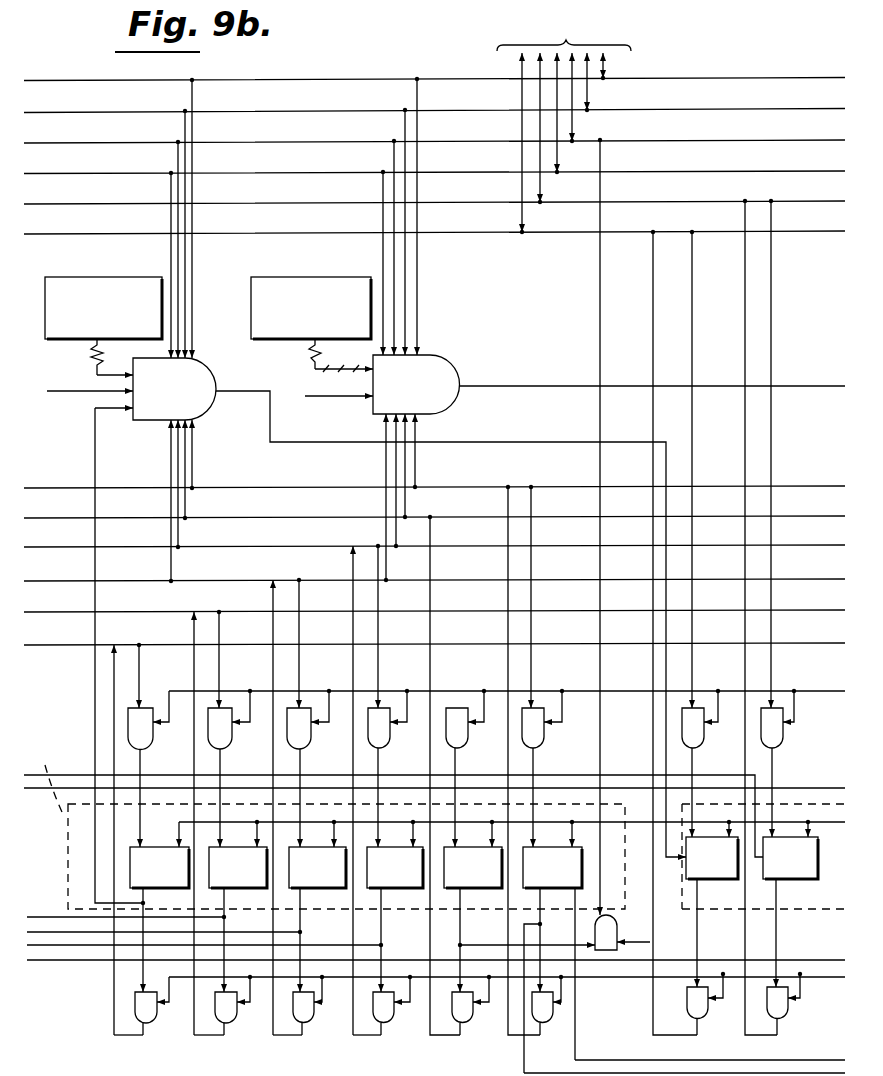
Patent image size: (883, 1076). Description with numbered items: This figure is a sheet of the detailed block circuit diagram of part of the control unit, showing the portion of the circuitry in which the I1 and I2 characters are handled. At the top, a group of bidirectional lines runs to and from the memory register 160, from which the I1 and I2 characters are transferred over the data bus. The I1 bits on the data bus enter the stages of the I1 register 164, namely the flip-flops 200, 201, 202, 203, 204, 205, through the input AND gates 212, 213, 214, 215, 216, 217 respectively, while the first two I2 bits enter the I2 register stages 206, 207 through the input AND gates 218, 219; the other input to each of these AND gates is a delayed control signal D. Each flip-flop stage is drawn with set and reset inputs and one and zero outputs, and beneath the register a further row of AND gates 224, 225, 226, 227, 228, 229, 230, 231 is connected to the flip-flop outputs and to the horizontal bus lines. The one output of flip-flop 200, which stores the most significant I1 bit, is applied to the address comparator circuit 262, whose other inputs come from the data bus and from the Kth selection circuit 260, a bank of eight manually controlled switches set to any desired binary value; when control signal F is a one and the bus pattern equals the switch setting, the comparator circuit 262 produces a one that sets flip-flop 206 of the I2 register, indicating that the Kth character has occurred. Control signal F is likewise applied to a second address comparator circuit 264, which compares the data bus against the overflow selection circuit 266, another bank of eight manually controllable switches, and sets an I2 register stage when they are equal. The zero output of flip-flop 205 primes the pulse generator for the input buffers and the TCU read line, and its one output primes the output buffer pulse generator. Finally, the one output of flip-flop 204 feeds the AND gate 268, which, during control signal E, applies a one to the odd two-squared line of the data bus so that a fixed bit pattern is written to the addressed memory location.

The memory register 160 is at (632, 46).
The I1 register 164 is at (431, 818).
The Kth selection circuit 260 is at (150, 263).
The overflow selection circuit 266 is at (258, 276).
The address comparator circuit 262 is at (222, 371).
The address comparator circuit 264 is at (440, 362).
The input AND gate 212 is at (150, 752).
The input AND gate 213 is at (230, 752).
The input AND gate 214 is at (309, 752).
The input AND gate 215 is at (388, 752).
The input AND gate 216 is at (466, 752).
The input AND gate 217 is at (542, 752).
The input AND gate 218 is at (702, 745).
The input AND gate 219 is at (781, 744).
The flip-flop 200 is at (185, 893).
The flip-flop 201 is at (262, 893).
The flip-flop 202 is at (341, 893).
The flip-flop 203 is at (418, 893).
The flip-flop 204 is at (502, 899).
The flip-flop 205 is at (592, 896).
The flip-flop 206 is at (740, 884).
The flip-flop 207 is at (820, 884).
The AND gate 224 is at (156, 1015).
The AND gate 225 is at (236, 1015).
The AND gate 226 is at (313, 1013).
The AND gate 227 is at (394, 1012).
The AND gate 228 is at (481, 1008).
The AND gate 229 is at (553, 1008).
The AND gate 230 is at (705, 1015).
The AND gate 231 is at (788, 1015).
The AND gate 268 is at (630, 916).